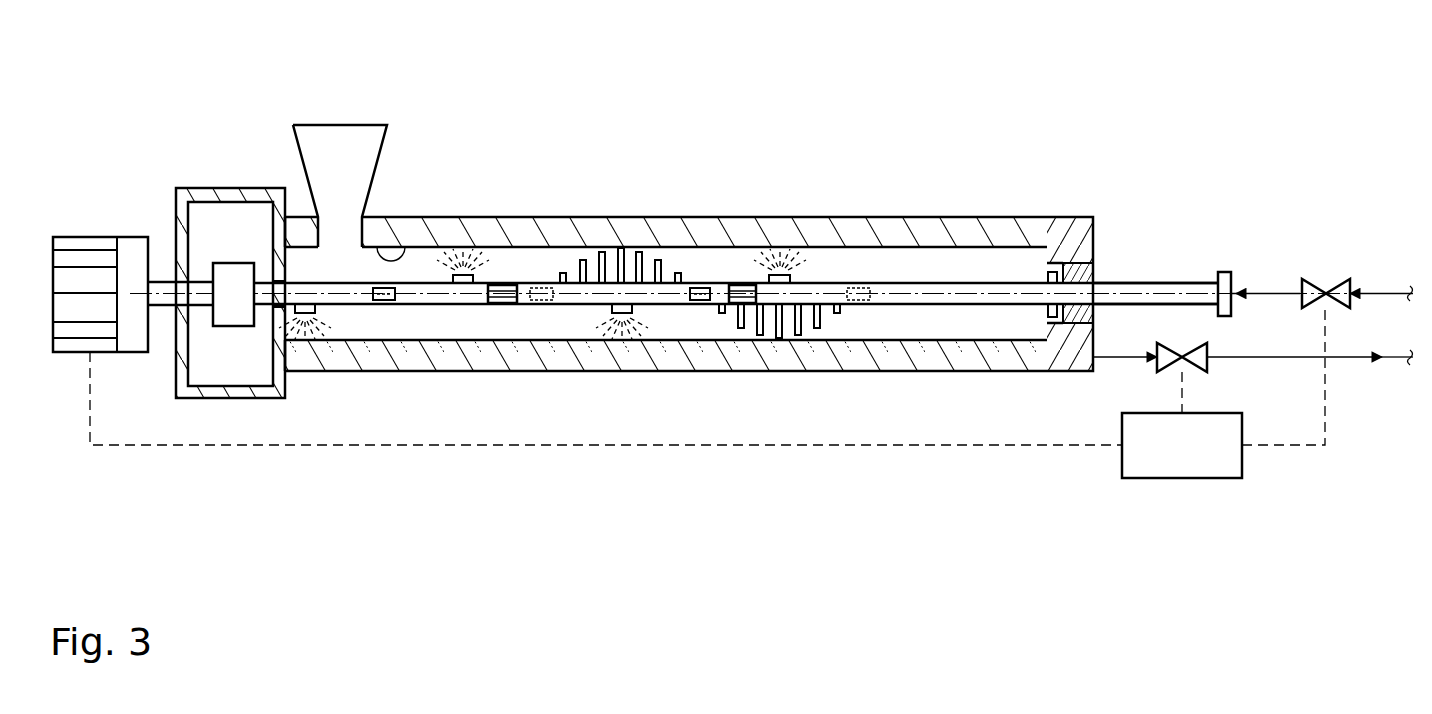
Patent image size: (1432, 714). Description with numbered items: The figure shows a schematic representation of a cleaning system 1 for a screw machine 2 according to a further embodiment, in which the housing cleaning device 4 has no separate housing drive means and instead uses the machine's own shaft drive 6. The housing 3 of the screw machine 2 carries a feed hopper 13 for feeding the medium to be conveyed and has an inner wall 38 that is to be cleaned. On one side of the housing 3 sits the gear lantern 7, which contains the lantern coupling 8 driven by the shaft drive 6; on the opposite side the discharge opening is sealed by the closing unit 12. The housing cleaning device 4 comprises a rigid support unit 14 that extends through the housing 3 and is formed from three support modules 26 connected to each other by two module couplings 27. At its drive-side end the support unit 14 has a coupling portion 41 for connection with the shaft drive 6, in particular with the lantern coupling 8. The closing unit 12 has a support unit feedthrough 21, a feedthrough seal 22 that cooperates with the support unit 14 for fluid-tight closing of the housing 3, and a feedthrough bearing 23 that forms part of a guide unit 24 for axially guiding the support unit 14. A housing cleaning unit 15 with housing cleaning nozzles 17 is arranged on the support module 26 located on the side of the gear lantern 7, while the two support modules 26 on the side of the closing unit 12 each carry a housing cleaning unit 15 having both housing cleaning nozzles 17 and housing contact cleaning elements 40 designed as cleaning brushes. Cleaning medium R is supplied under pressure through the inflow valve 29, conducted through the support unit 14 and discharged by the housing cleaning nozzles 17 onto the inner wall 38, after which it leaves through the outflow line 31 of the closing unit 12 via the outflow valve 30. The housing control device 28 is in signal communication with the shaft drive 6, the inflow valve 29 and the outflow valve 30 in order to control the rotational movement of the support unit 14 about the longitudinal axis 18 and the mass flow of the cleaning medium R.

The cleaning system 1 is at (864, 174).
The screw machine 2 is at (489, 203).
The housing 3 is at (599, 225).
The housing cleaning device 4 is at (1186, 242).
The shaft drive 6 is at (95, 255).
The gear lantern 7 is at (228, 203).
The lantern coupling 8 is at (237, 270).
The closing unit 12 is at (1074, 211).
The feed hopper 13 is at (340, 135).
The support unit 14 is at (827, 292).
The housing cleaning unit 15 is at (462, 262).
The housing cleaning nozzles 17 is at (461, 283).
The longitudinal axis 18 is at (800, 290).
The support unit feedthrough 21 is at (1065, 274).
The feedthrough seal 22 is at (1047, 277).
The feedthrough bearing 23 is at (1110, 250).
The guide unit 24 is at (1112, 250).
The support modules 26 is at (527, 296).
The module coupling 27 is at (512, 286).
The housing control device 28 is at (1166, 467).
The inflow valve 29 is at (1342, 311).
The outflow valve 30 is at (1208, 358).
The outflow line 31 is at (1112, 358).
The inner wall 38 is at (390, 257).
The housing contact cleaning element 40 is at (640, 260).
The coupling portion 41 is at (262, 298).
The cleaning medium R is at (313, 313).